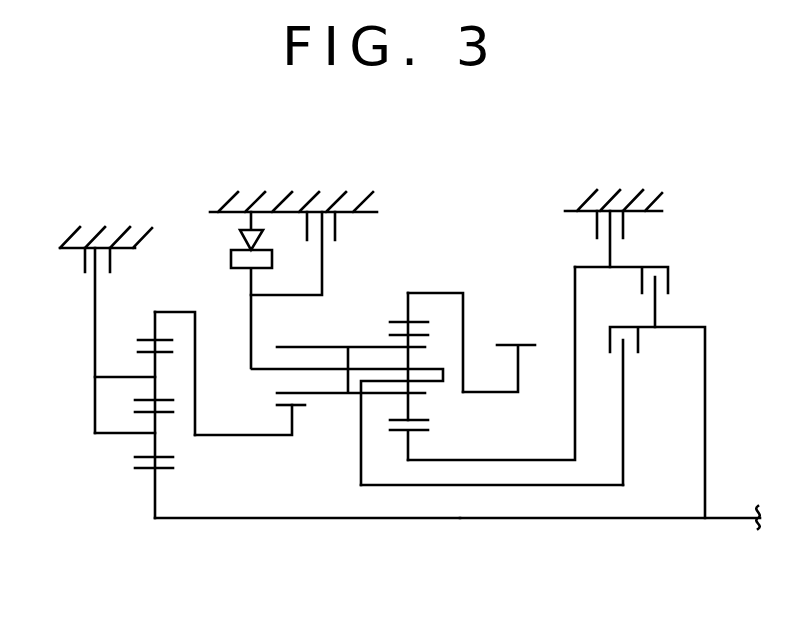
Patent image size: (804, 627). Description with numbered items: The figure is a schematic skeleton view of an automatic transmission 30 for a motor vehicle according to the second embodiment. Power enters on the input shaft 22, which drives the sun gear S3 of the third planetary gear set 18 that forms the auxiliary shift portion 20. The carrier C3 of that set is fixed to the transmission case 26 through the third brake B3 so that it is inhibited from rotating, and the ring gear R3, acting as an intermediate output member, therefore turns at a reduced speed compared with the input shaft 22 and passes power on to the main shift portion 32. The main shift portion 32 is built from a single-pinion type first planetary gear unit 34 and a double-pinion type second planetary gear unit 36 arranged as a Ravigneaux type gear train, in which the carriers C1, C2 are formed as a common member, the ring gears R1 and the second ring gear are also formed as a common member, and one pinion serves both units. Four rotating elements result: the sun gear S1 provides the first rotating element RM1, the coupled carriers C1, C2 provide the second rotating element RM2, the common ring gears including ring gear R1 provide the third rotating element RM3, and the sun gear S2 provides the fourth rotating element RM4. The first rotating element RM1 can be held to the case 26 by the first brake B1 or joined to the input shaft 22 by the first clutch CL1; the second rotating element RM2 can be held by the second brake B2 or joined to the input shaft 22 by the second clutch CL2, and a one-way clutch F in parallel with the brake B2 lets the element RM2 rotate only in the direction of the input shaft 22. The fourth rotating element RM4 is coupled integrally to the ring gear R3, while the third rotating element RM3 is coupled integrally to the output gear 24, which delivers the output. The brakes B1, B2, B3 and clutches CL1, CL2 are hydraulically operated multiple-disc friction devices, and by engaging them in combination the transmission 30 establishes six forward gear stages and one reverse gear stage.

The third planetary gear set 18 is at (165, 272).
The auxiliary shift portion 20 is at (155, 533).
The input shaft 22 is at (735, 518).
The output gear 24 is at (518, 345).
The transmission case 26 is at (106, 233).
The automatic transmission 30 is at (649, 153).
The main shift portion 32 is at (197, 158).
The first planetary gear unit 34 is at (411, 272).
The second planetary gear unit 36 is at (259, 458).
The first brake B1 is at (586, 237).
The second brake B2 is at (320, 251).
The third brake B3 is at (72, 339).
The one-way clutch F is at (238, 290).
The carrier C1 is at (428, 382).
The carrier C2 is at (250, 335).
The carrier C3 is at (93, 413).
The first clutch CL1 is at (659, 285).
The second clutch CL2 is at (657, 422).
The ring gear R1 is at (400, 320).
The ring gear R3 is at (148, 340).
The sun gear S1 is at (408, 435).
The sun gear S2 is at (297, 405).
The sun gear S3 is at (146, 470).
The first rotating element RM1 is at (530, 447).
The second rotating element RM2 is at (360, 455).
The third rotating element RM3 is at (468, 268).
The fourth rotating element RM4 is at (230, 437).